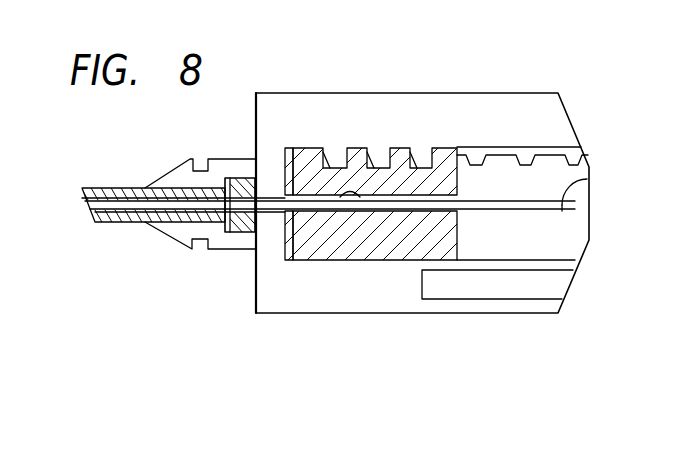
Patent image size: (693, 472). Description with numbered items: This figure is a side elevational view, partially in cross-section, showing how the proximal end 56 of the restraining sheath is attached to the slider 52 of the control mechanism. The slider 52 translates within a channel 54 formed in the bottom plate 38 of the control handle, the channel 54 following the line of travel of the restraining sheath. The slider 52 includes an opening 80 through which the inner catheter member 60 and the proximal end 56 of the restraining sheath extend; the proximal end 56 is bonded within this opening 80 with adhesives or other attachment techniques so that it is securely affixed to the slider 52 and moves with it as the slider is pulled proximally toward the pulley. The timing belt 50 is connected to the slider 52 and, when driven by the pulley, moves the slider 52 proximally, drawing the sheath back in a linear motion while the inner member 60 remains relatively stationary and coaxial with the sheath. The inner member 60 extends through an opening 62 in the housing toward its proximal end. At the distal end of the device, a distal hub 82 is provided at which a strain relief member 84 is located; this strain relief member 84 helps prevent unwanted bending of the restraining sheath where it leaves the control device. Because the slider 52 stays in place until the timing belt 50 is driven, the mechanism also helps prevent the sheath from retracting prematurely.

The bottom plate 38 is at (408, 93).
The timing belt 50 is at (500, 155).
The slider 52 is at (390, 250).
The channel 54 is at (567, 237).
The proximal end of the restraining sheath 56 is at (317, 207).
The inner member 60 is at (587, 179).
The opening in the housing 62 is at (254, 209).
The opening in the slider 80 is at (358, 210).
The distal hub 82 is at (170, 172).
The strain relief member 84 is at (105, 225).